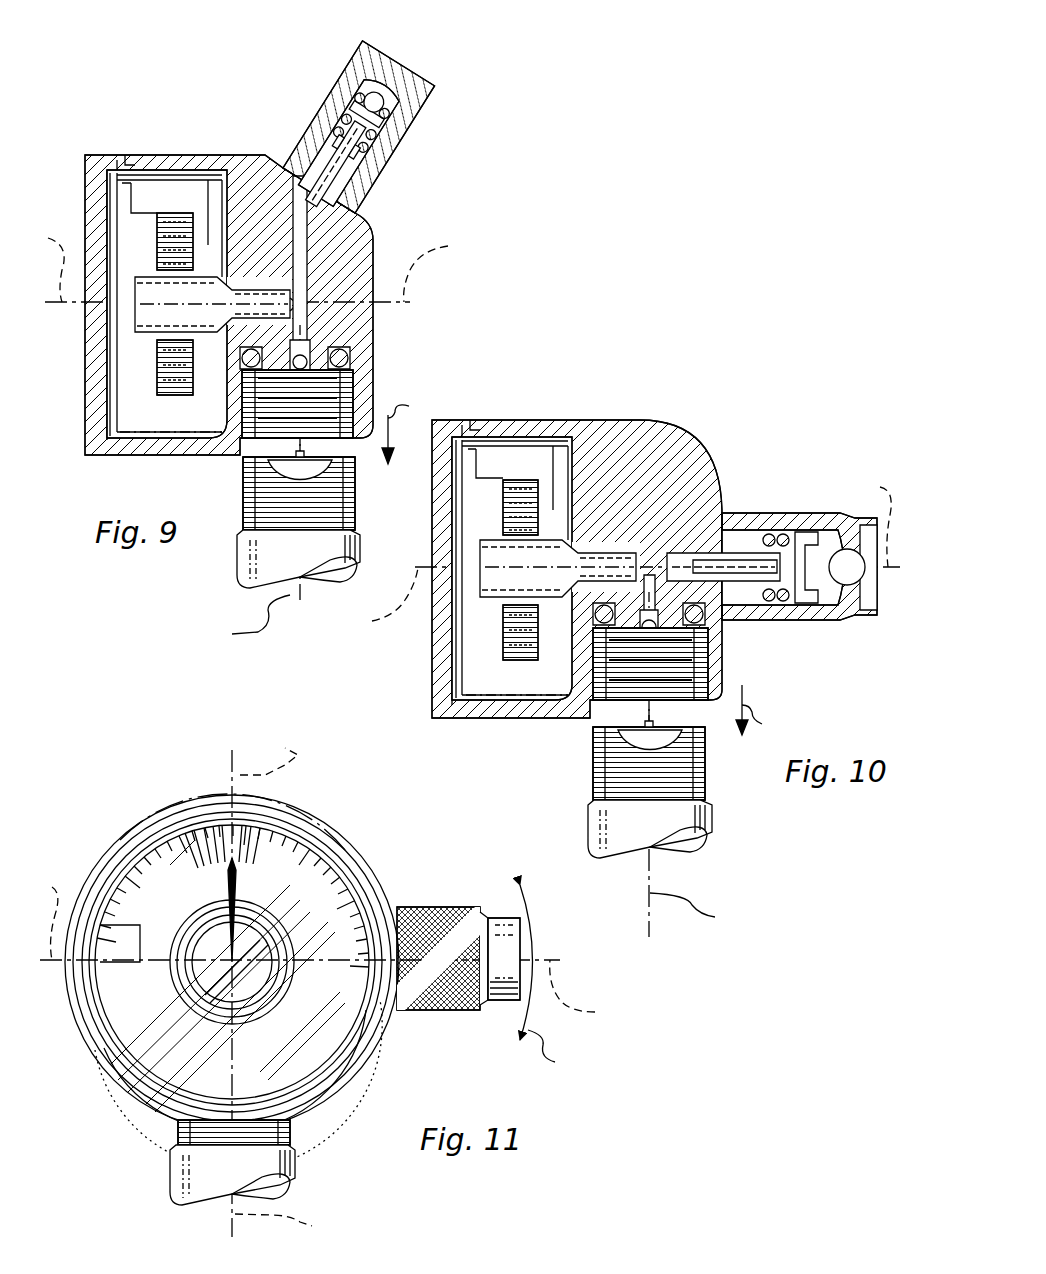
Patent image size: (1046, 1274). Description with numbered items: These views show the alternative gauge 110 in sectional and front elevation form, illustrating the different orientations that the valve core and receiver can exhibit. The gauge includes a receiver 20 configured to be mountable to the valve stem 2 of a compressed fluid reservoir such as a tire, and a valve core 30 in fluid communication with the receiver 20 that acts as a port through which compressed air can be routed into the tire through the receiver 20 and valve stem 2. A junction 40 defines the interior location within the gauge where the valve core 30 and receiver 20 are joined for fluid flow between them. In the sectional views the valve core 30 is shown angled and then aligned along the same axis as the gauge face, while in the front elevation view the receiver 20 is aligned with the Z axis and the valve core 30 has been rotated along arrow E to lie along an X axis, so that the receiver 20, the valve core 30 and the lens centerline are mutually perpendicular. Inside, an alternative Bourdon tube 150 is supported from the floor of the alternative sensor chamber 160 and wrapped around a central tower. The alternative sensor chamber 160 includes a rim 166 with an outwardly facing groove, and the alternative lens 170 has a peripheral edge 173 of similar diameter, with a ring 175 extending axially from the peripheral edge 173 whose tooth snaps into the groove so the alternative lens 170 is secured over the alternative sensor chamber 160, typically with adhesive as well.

In FIG. 9, the valve stem 2 is at (253, 548).
In FIG. 10, the valve stem 2 is at (603, 830).
In FIG. 11, the valve stem 2 is at (185, 1163).
In FIG. 9, the receiver 20 is at (340, 400).
In FIG. 10, the receiver 20 is at (693, 660).
In FIG. 9, the valve core 30 is at (320, 102).
In FIG. 10, the valve core 30 is at (783, 520).
In FIG. 11, the valve core 30 is at (435, 908).
In FIG. 9, the junction 40 is at (312, 308).
In FIG. 10, the junction 40 is at (653, 580).
In FIG. 9, the alternative gauge 110 is at (412, 207).
In FIG. 10, the alternative gauge 110 is at (655, 380).
In FIG. 11, the alternative gauge 110 is at (160, 770).
In FIG. 9, the alternative Bourdon tube 150 is at (162, 237).
In FIG. 10, the alternative Bourdon tube 150 is at (507, 497).
In FIG. 11, the alternative Bourdon tube 150 is at (140, 1048).
In FIG. 9, the alternative sensor chamber 160 is at (140, 412).
In FIG. 10, the alternative sensor chamber 160 is at (485, 688).
In FIG. 11, the alternative sensor chamber 160 is at (323, 1027).
In FIG. 11, the rim 166 is at (145, 1068).
In FIG. 9, the alternative lens 170 is at (85, 340).
In FIG. 10, the alternative lens 170 is at (432, 652).
In FIG. 11, the alternative lens 170 is at (332, 1083).
In FIG. 11, the peripheral edge 173 is at (130, 827).
In FIG. 11, the ring 175 is at (108, 858).